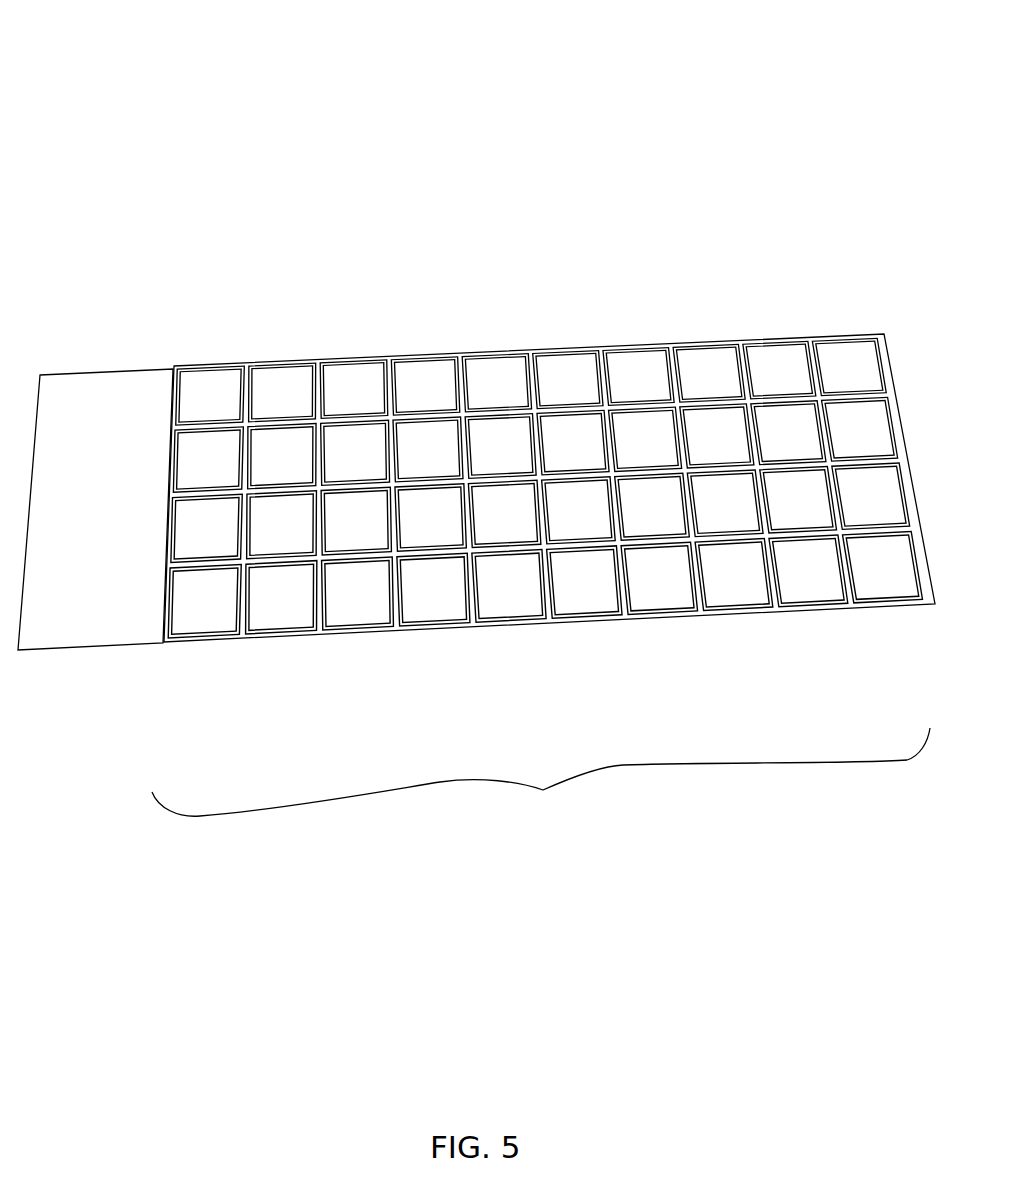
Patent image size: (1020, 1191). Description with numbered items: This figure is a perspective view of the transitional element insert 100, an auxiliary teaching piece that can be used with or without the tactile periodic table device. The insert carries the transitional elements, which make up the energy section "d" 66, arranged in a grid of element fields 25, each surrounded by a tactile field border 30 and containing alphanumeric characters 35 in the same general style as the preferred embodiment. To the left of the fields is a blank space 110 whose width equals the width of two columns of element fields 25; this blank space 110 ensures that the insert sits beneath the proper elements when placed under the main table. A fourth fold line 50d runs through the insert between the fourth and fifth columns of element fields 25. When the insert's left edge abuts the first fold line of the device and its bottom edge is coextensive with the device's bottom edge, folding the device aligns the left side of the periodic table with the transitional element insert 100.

The transitional element insert 100 is at (219, 185).
The blank space 110 is at (102, 460).
The fourth fold line 50d is at (457, 354).
The field border 30 is at (733, 345).
The alphanumeric character 35 is at (842, 337).
The element field 25 is at (650, 615).
The energy section "d" 66 is at (543, 790).